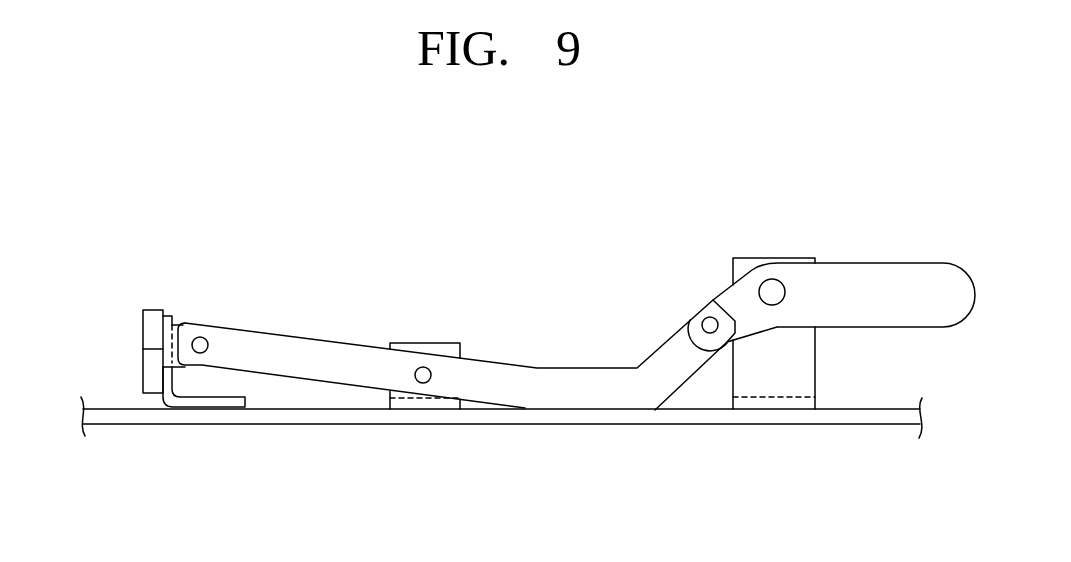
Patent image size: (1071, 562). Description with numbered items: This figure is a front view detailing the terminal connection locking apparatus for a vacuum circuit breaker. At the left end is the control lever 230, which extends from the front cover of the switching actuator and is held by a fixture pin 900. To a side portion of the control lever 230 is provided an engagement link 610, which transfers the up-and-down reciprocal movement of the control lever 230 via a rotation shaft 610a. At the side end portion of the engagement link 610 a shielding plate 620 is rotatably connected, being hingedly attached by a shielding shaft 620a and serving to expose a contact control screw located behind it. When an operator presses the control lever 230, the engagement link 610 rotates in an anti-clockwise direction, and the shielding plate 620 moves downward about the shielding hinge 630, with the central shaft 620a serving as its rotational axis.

The control lever 230 is at (142, 310).
The fixture pin 900 is at (200, 337).
The engagement link 610 is at (301, 348).
The rotation shaft 610a is at (423, 367).
The shielding hinge 630 is at (702, 322).
The shielding plate 620 is at (872, 278).
The shielding shaft 620a is at (772, 279).